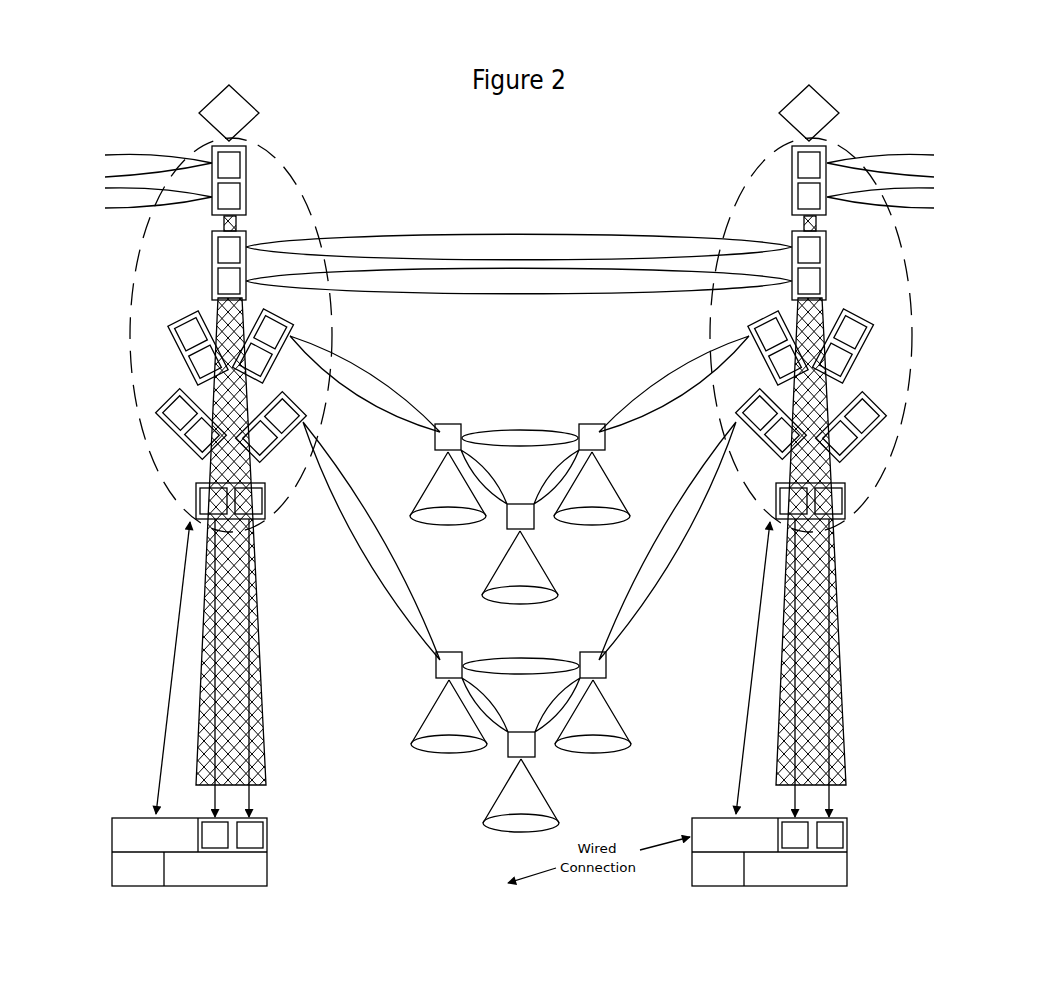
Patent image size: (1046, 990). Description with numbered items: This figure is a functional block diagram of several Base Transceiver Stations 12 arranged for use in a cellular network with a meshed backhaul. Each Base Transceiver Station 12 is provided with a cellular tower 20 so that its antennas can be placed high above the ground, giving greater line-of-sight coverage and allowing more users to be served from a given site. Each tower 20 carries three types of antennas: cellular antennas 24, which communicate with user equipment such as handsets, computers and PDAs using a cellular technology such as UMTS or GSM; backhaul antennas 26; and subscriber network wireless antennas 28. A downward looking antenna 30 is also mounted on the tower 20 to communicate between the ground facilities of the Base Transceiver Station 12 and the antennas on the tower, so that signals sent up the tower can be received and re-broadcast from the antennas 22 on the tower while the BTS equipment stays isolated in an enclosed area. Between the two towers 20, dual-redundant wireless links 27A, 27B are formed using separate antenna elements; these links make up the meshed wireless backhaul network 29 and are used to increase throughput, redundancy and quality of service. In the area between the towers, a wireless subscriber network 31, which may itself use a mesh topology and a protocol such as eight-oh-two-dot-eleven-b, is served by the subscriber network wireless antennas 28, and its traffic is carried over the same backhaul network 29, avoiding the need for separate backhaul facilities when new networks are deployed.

The Base Transceiver Station 12 is at (110, 850).
The cellular tower 20 is at (261, 597).
The antennas 22 is at (288, 177).
The cellular antennas 24 is at (247, 98).
The backhaul antennas 26 is at (254, 198).
The wireless link 27A is at (519, 247).
The wireless link 27B is at (519, 281).
The subscriber network wireless antennas 28 is at (297, 333).
The meshed wireless backhaul network 29 is at (519, 232).
The downward looking antenna 30 is at (269, 506).
The wireless subscriber network 31 is at (535, 380).